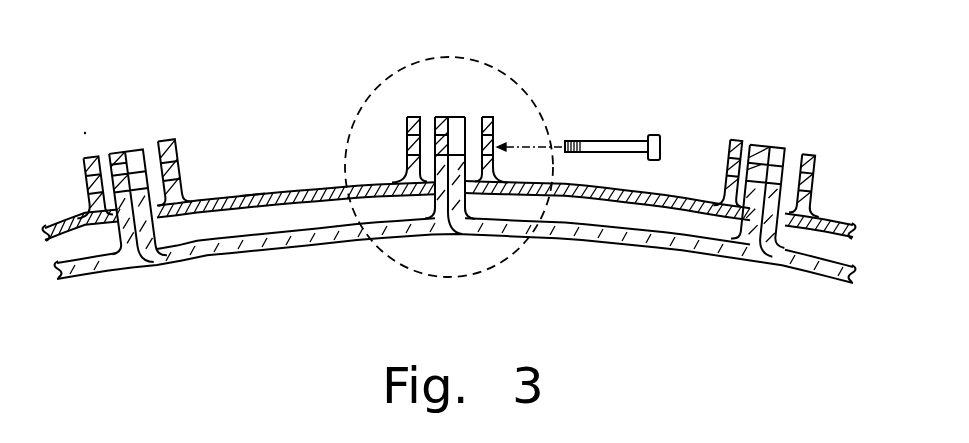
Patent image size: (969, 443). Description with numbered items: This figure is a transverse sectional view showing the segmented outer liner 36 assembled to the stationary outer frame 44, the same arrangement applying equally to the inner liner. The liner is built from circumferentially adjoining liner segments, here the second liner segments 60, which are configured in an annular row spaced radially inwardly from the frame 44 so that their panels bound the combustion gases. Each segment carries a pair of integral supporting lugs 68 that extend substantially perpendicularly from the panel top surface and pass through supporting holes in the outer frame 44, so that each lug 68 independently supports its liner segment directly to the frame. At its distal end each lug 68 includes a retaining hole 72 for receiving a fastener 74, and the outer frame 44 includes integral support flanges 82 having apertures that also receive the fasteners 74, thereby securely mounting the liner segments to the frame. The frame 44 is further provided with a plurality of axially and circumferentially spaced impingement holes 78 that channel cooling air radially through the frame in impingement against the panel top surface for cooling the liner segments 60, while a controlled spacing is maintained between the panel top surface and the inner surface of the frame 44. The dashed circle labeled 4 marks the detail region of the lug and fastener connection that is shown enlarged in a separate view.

The detail area (FIG. 4) 4 is at (538, 108).
The outer liner 36 is at (152, 268).
The outer frame 44 is at (314, 183).
The second liner segments 60 is at (282, 249).
The supporting lugs 68 is at (457, 117).
The retaining hole 72 is at (437, 148).
The fastener 74 is at (607, 140).
The impingement holes 78 is at (252, 193).
The support flanges 82 is at (817, 160).